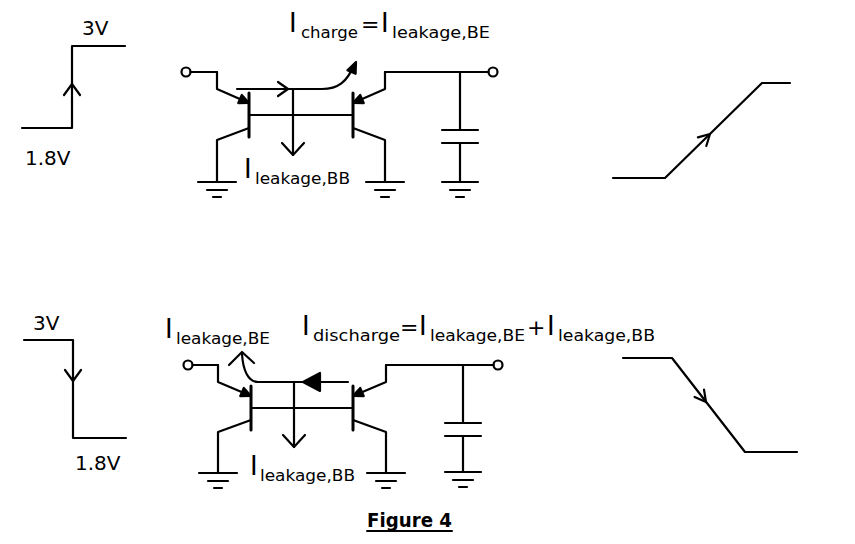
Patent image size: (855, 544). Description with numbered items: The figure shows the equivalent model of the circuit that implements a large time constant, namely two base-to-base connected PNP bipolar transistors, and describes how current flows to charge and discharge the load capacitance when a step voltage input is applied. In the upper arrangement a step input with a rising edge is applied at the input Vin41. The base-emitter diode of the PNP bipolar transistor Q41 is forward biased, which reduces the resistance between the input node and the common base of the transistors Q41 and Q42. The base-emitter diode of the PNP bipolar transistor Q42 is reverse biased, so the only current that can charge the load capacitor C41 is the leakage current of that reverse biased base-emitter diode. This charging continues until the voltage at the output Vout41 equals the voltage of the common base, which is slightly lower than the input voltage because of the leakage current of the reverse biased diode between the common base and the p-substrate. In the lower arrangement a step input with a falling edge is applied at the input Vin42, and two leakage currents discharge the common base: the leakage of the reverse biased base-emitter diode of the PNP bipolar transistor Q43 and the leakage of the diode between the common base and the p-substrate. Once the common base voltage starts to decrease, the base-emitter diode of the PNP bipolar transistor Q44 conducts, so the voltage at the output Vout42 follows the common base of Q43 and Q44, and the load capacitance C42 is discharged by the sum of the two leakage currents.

The PNP bipolar transistor Q41 is at (213, 134).
The PNP bipolar transistor Q42 is at (385, 134).
The load capacitor C41 is at (490, 134).
The PNP bipolar transistor Q43 is at (215, 426).
The PNP bipolar transistor Q44 is at (387, 426).
The load capacitance C42 is at (492, 426).
The input node Vin41 is at (148, 73).
The output node Vout41 is at (541, 73).
The input node Vin42 is at (149, 366).
The output node Vout42 is at (549, 366).